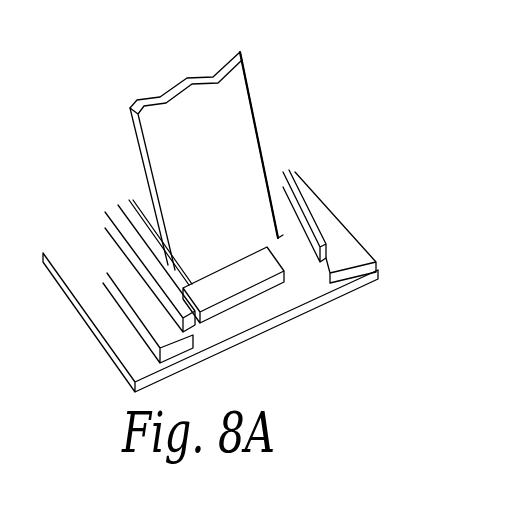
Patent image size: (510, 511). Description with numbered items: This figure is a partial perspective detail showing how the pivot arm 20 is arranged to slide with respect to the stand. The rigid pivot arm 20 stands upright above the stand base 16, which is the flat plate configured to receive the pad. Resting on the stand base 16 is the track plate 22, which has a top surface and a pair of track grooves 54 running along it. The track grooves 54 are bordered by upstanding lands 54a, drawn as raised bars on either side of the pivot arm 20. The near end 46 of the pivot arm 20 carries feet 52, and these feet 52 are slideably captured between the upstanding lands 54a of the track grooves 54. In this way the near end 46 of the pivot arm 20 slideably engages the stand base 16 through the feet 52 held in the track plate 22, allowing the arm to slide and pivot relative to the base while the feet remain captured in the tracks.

The stand base 16 is at (283, 318).
The pivot arm 20 is at (214, 169).
The track plate 22 is at (128, 300).
The near end 46 is at (248, 256).
The feet 52 is at (290, 247).
The track grooves 54 is at (135, 208).
The upstanding lands 54a is at (133, 259).